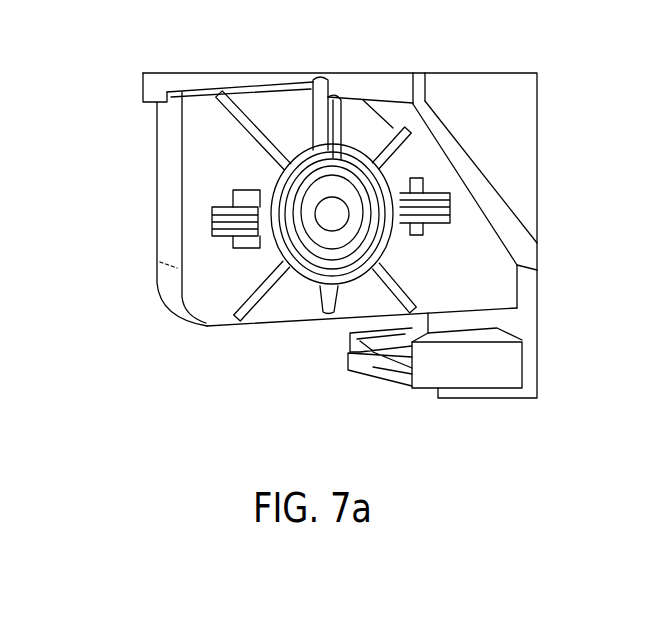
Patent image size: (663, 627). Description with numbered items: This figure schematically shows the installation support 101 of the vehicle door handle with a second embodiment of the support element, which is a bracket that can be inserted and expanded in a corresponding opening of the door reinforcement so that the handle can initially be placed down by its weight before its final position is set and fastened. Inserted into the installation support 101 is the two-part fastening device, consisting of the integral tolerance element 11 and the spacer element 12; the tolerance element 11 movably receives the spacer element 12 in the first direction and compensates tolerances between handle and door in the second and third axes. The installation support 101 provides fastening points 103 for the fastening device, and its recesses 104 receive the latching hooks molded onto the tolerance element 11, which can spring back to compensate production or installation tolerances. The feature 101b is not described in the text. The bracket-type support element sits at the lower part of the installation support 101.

The tolerance element 11 is at (352, 178).
The spacer element 12 is at (317, 195).
The installation support 101 is at (490, 123).
The connector 101b is at (350, 338).
The fastening points 103 is at (207, 248).
The recesses 104 is at (237, 192).